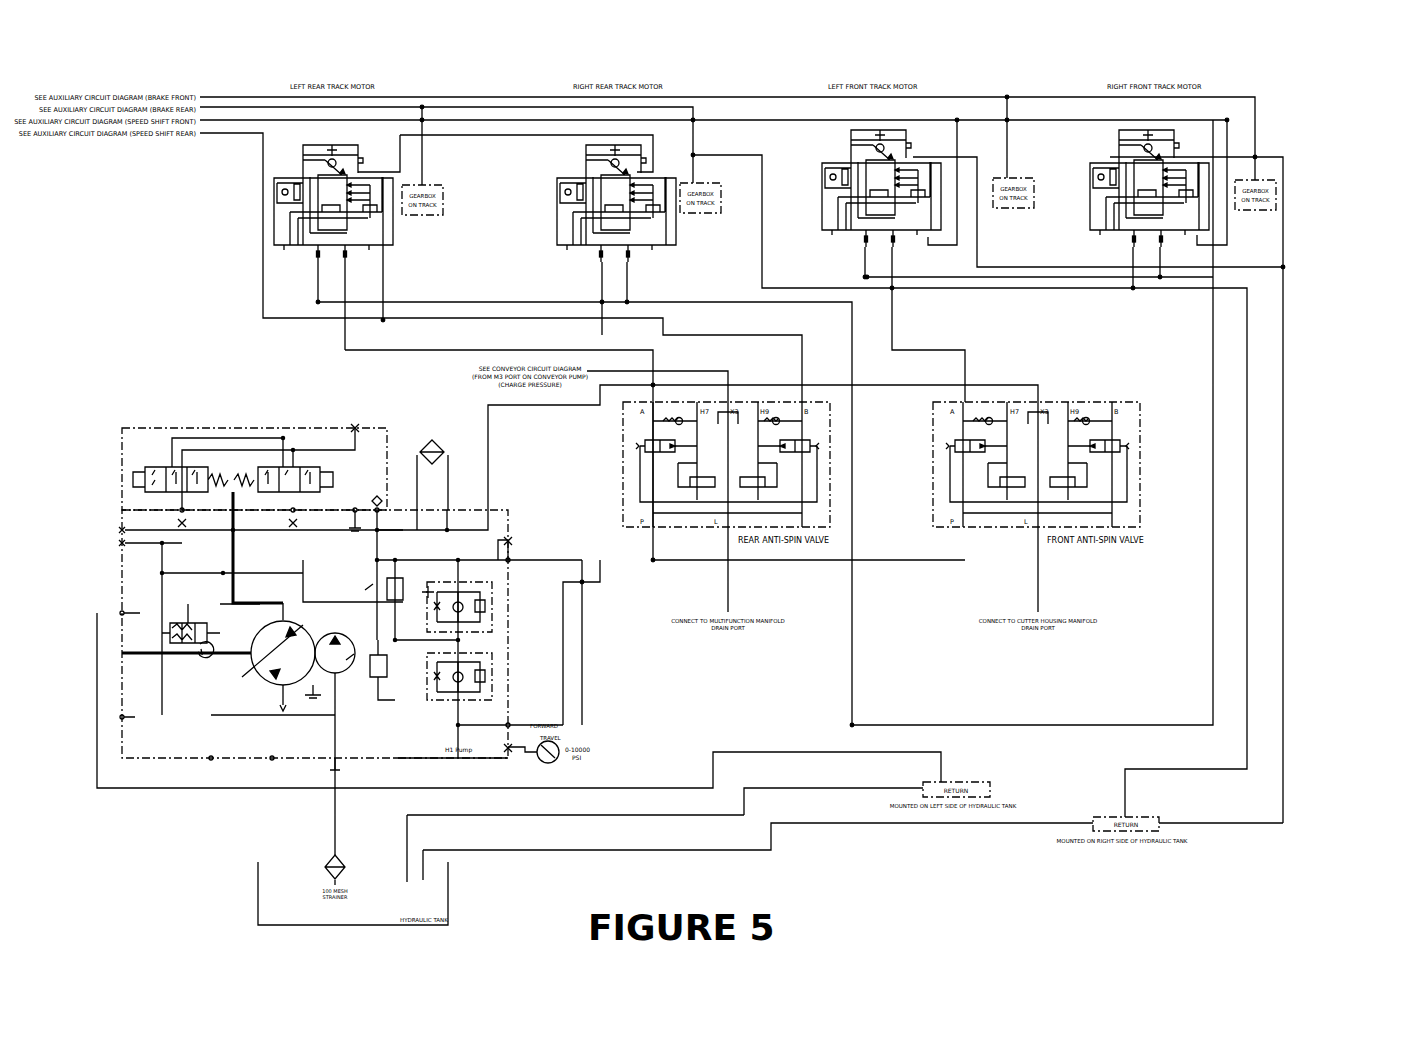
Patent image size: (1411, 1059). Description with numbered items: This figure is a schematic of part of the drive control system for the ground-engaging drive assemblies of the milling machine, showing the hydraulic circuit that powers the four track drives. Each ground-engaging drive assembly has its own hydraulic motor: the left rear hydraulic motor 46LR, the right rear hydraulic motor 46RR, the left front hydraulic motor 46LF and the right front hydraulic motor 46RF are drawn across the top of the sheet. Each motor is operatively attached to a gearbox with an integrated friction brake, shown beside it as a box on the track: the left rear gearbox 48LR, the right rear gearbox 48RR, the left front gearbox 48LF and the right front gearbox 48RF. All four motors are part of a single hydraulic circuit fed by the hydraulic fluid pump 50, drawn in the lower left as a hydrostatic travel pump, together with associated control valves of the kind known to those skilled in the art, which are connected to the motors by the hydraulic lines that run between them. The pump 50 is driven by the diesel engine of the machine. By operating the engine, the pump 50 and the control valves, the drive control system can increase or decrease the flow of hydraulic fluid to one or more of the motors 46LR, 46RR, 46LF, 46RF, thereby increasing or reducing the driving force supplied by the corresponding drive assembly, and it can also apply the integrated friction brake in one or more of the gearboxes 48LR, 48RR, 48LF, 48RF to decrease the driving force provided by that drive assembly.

The left rear hydraulic motor 46LR is at (357, 138).
The right rear hydraulic motor 46RR is at (660, 143).
The left front hydraulic motor 46LF is at (918, 137).
The right front hydraulic motor 46RF is at (1188, 140).
The left rear gearbox 48LR is at (433, 183).
The right rear gearbox 48RR is at (720, 203).
The left front gearbox 48LF is at (1015, 177).
The right front gearbox 48RF is at (1265, 175).
The hydraulic fluid pump 50 is at (257, 772).